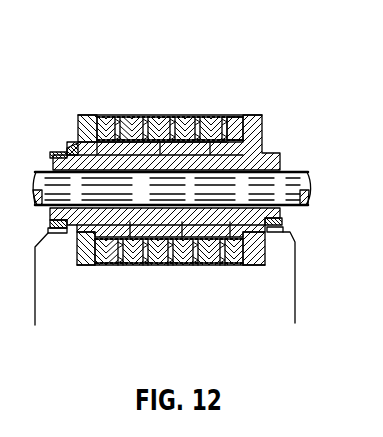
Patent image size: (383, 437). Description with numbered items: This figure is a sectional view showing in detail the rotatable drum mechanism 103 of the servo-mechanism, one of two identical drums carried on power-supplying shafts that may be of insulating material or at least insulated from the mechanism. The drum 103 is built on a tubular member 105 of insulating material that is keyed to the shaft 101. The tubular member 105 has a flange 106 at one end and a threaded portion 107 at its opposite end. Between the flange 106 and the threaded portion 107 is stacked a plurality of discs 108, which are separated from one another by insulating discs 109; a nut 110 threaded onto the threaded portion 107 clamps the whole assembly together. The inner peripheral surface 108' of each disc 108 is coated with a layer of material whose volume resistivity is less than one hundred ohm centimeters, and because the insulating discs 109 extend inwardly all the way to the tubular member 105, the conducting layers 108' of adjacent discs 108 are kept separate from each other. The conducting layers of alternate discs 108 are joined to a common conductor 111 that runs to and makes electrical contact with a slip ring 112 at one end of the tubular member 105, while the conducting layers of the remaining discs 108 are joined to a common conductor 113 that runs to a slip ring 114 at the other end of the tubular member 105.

The power-supplying shaft 101 is at (299, 178).
The rotatable drum mechanism 103 is at (88, 86).
The tubular member 105 is at (55, 166).
The flange 106 is at (262, 117).
The threaded portion 107 is at (77, 234).
The discs 108 is at (171, 278).
The inner peripheral surface 108' is at (162, 112).
The insulating discs 109 is at (132, 268).
The nut 110 is at (90, 267).
The common conductor 111 is at (74, 148).
The slip ring 112 is at (52, 153).
The common conductor 113 is at (258, 246).
The slip ring 114 is at (282, 222).